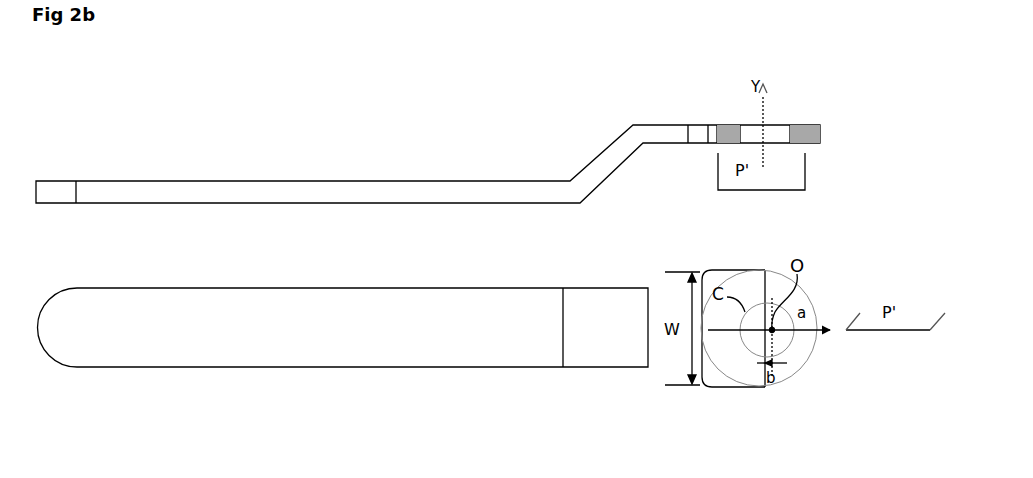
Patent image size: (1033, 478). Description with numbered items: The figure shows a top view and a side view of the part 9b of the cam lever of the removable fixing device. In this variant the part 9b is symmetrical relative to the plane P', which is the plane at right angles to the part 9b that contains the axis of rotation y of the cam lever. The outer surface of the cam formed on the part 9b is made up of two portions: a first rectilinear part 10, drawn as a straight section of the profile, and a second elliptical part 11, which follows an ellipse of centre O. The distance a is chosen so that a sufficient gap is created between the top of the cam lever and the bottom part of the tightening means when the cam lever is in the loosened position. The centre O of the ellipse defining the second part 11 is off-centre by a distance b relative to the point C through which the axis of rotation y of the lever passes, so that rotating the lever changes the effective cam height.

The part of the cam lever 9b is at (430, 345).
The first part of the outer surface of a cam 10 is at (735, 388).
The second part of the outer surface of a cam 11 is at (803, 382).